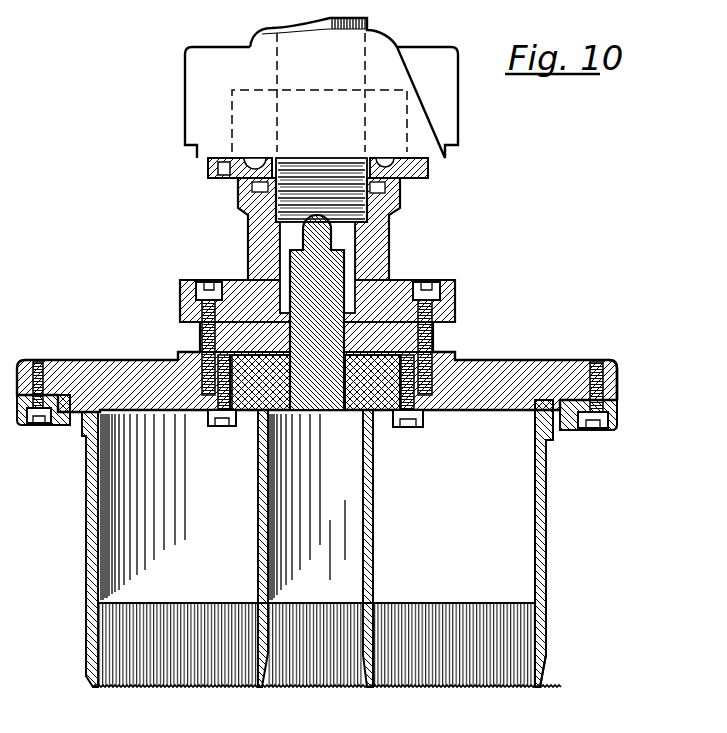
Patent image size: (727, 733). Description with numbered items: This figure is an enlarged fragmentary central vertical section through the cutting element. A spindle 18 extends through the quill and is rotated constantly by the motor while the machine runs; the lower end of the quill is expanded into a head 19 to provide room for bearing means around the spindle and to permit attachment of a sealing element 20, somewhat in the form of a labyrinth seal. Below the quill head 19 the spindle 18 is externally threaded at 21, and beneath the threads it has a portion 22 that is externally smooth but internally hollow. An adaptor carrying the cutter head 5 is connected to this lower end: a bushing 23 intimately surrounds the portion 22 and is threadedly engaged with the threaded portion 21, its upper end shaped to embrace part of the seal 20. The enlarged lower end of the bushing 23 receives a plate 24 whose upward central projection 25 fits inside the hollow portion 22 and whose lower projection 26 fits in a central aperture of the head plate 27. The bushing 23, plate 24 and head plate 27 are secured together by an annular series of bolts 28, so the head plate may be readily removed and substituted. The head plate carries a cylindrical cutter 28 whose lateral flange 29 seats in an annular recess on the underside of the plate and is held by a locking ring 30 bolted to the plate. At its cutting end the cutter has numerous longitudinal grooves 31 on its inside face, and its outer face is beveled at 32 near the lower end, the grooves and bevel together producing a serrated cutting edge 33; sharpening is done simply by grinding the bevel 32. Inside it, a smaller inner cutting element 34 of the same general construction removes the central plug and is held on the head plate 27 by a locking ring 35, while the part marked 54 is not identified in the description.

The cutter head 5 is at (623, 386).
The spindle 18 is at (290, 30).
The head 19 is at (445, 115).
The sealing element 20 is at (428, 170).
The externally threaded portion 21 is at (324, 176).
The hollow portion 22 is at (353, 266).
The bushing 23 is at (378, 273).
The plate 24 is at (448, 347).
The upward central projection 25 is at (310, 282).
The lower projection 26 is at (330, 413).
The head plate 27 is at (552, 363).
The bolts / cylindrical cutter 28 is at (452, 300).
The lateral flange 29 is at (550, 408).
The locking ring 30 is at (575, 430).
The grooves 31 is at (422, 643).
The bevel 32 is at (542, 671).
The serrated cutting edge 33 is at (448, 690).
The inner cutting element 34 is at (368, 548).
The locking ring 35 is at (236, 427).
The knurled cap 54 is at (383, 47).